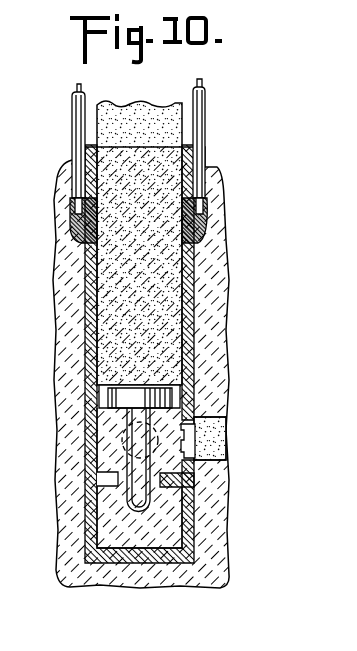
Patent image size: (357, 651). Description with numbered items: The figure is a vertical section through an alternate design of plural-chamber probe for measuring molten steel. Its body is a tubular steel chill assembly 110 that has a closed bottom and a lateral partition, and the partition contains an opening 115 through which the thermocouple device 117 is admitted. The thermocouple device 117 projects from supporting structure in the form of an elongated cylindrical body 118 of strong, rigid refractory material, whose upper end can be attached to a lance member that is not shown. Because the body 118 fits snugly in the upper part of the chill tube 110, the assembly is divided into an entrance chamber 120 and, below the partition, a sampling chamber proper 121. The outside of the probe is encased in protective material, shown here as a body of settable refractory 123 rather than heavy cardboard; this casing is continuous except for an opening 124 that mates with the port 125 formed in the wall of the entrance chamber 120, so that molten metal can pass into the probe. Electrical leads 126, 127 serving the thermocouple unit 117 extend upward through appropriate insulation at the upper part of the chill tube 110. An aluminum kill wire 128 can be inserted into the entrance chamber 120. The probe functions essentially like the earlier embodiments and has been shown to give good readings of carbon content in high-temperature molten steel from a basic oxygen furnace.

The tubular steel chill assembly 110 is at (88, 370).
The opening 115 is at (153, 491).
The thermocouple device 117 is at (135, 520).
The elongated cylindrical body 118 is at (153, 180).
The entrance chamber 120 is at (170, 465).
The sampling chamber 121 is at (105, 524).
The body of settable refractory 123 is at (222, 238).
The opening 124 is at (212, 447).
The port 125 is at (183, 433).
The electrical lead 126 is at (76, 127).
The electrical lead 127 is at (203, 128).
The aluminum kill wire 128 is at (115, 430).